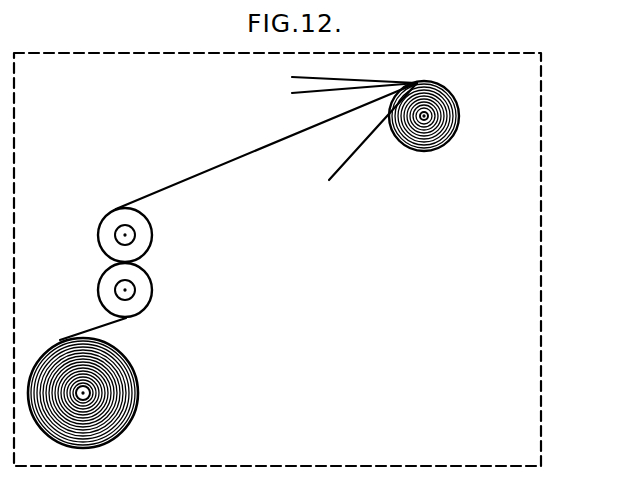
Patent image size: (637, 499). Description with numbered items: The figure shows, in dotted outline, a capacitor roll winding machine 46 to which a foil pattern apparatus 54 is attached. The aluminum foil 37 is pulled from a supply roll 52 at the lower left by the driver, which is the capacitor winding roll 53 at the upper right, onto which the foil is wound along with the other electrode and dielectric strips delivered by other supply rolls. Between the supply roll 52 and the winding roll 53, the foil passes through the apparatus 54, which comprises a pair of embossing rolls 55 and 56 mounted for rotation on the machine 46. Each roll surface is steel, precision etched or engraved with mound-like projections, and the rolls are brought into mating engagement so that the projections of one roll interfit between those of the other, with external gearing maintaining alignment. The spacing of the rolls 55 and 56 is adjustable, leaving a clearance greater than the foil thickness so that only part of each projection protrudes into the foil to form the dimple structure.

The aluminum foil 37 is at (238, 154).
The capacitor roll winding machine 46 is at (541, 205).
The supply roll 52 is at (138, 391).
The capacitor winding roll 53 is at (447, 143).
The foil pattern apparatus 54 is at (307, 238).
The embossing roll 55 is at (110, 207).
The embossing roll 56 is at (98, 290).